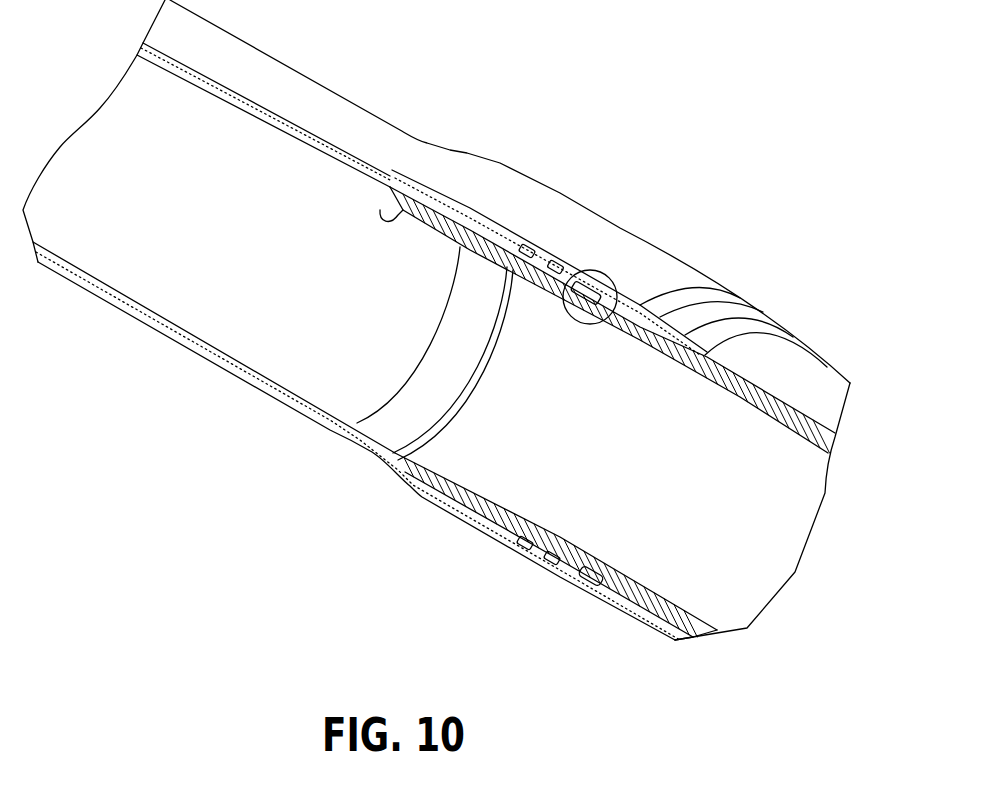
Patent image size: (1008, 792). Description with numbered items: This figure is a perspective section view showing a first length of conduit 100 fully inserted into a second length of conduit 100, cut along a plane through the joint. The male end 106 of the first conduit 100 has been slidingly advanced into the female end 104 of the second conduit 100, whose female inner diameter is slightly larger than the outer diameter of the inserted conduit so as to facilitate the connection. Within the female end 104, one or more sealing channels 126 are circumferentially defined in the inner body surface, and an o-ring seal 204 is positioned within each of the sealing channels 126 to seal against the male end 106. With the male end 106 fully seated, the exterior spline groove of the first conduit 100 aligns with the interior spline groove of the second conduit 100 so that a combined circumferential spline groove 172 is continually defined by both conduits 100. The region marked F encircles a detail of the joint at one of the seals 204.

The length of conduit 100 is at (307, 78).
The male end 106 is at (380, 210).
The o-ring seal 204 is at (534, 252).
The fillet region F is at (610, 277).
The female end 104 is at (777, 320).
The sealing channels 126 is at (543, 561).
The combined circumferential spline groove 172 is at (580, 584).